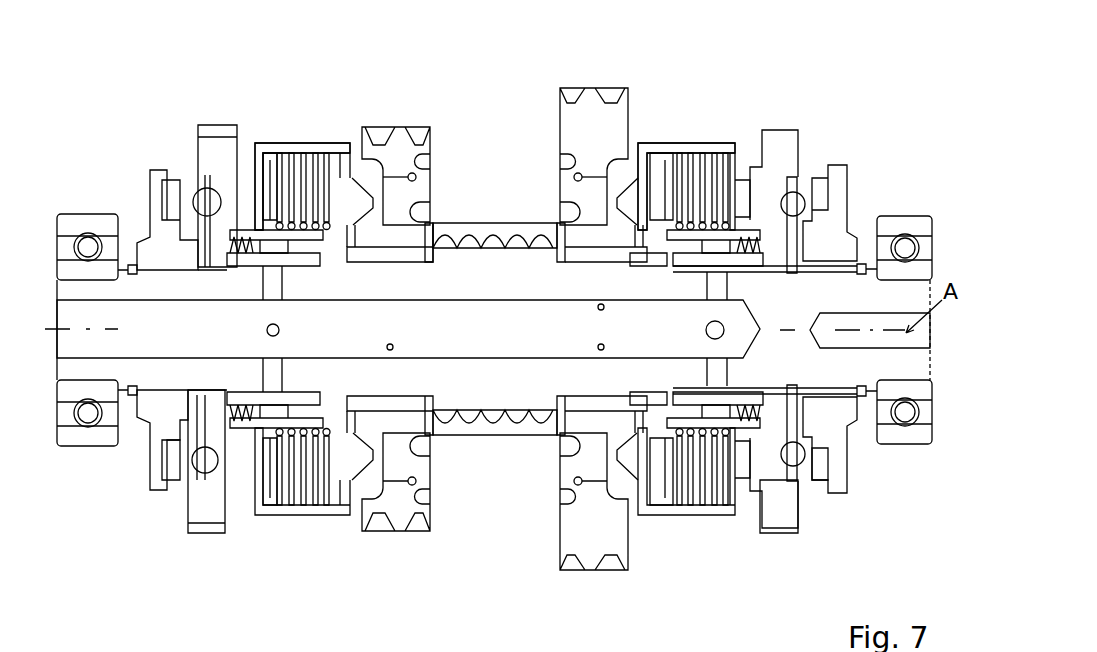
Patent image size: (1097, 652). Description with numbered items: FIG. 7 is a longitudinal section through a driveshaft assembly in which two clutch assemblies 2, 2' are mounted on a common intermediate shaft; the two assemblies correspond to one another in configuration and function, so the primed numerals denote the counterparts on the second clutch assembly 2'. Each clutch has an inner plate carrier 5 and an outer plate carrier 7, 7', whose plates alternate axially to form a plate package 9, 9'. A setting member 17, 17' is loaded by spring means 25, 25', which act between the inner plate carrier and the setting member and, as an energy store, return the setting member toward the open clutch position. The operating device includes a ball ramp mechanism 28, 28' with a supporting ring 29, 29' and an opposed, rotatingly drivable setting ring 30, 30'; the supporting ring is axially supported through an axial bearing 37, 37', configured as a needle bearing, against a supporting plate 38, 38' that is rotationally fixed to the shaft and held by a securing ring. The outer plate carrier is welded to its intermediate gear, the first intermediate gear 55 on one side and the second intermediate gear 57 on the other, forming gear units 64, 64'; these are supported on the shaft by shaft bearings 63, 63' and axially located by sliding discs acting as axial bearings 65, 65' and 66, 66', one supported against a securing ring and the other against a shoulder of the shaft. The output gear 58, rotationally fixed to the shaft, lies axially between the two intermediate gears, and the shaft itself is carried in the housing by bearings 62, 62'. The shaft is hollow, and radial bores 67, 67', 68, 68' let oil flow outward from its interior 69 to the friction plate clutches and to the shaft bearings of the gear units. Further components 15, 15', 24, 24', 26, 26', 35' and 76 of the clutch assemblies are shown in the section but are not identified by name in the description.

The clutch assembly 2 is at (686, 116).
The clutch assembly 2' is at (302, 116).
The inner plate carrier 5 is at (657, 520).
The outer plate carrier 7 is at (694, 160).
The outer plate carrier 7' is at (314, 166).
The plate package 9 is at (702, 159).
The plate package 9' is at (303, 159).
The inner plate carrier 15 is at (702, 495).
The inner plate carrier 15' is at (303, 501).
The setting member 17 is at (784, 409).
The setting member 17' is at (232, 245).
The hub 24 is at (722, 274).
The hub 24' is at (277, 295).
The spring means 25 is at (752, 391).
The spring means 25' is at (246, 171).
The pressure plate 26 is at (718, 489).
The pressure plate 26' is at (273, 490).
The ball ramp mechanism 28 is at (805, 138).
The ball ramp mechanism 28' is at (167, 161).
The supporting ring 29 is at (829, 488).
The supporting ring 29' is at (187, 486).
The setting ring 30 is at (774, 512).
The setting ring 30' is at (215, 491).
The housing cover 35' is at (217, 168).
The axial bearing 37 is at (829, 496).
The axial bearing 37' is at (151, 499).
The supporting plate 38 is at (844, 195).
The supporting plate 38' is at (138, 461).
The first intermediate gear 55 is at (588, 90).
The second intermediate gear 57 is at (403, 130).
The output gear 58 is at (489, 235).
The bearing 62 is at (802, 217).
The bearing 62' is at (142, 210).
The shaft bearing 63 is at (566, 280).
The shaft bearing 63' is at (431, 280).
The gear unit 64 is at (622, 105).
The gear unit 64' is at (376, 127).
The axial bearing 65 is at (647, 245).
The axial bearing 65' is at (385, 292).
The axial bearing 66 is at (581, 258).
The axial bearing 66' is at (461, 280).
The radial bore 67 is at (702, 305).
The radial bore 67' is at (254, 311).
The radial bore 68 is at (602, 327).
The radial bore 68' is at (391, 331).
The interior of the shaft 69 is at (178, 357).
The hub 76 is at (678, 385).